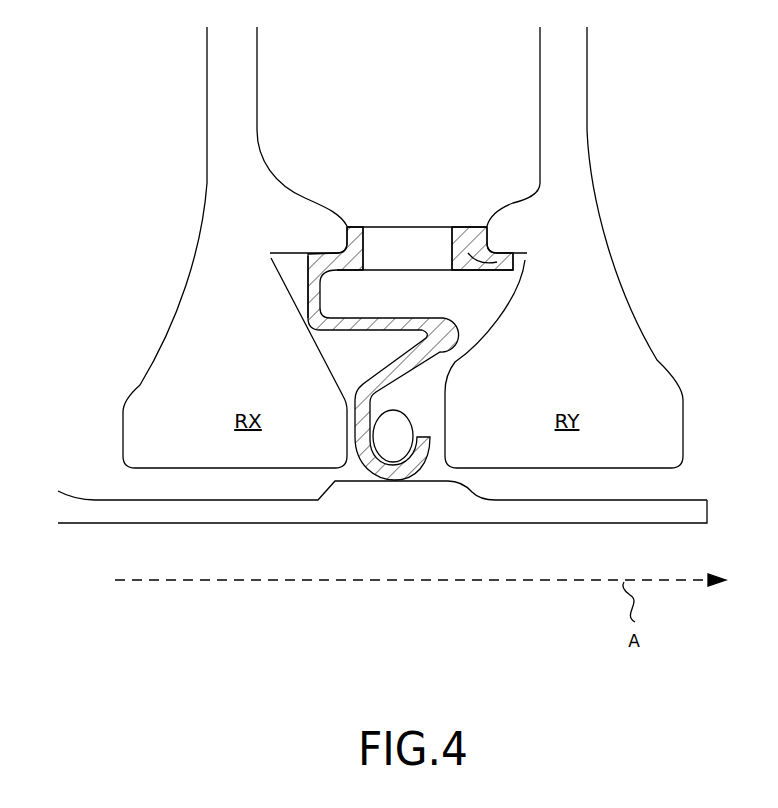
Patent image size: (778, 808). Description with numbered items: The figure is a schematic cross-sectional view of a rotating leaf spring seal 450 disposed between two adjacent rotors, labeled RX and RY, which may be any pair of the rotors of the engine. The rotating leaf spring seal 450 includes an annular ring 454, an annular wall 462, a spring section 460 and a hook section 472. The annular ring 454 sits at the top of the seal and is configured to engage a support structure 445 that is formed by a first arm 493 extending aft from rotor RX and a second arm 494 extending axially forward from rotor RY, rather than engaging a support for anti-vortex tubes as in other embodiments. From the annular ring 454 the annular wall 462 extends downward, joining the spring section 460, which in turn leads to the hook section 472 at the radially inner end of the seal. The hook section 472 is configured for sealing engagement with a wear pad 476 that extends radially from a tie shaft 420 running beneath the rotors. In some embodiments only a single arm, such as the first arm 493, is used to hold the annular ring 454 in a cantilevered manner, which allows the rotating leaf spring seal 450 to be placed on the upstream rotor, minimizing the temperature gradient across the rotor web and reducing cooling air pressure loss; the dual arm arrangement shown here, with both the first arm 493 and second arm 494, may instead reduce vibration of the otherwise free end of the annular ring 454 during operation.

The tie shaft 420 is at (500, 507).
The support structure 445 is at (458, 208).
The rotating leaf spring seal 450 is at (338, 352).
The annular ring 454 is at (518, 258).
The spring section 460 is at (445, 352).
The annular wall 462 is at (313, 284).
The hook section 472 is at (362, 441).
The wear pad 476 is at (352, 495).
The first arm 493 is at (280, 210).
The second arm 494 is at (516, 217).